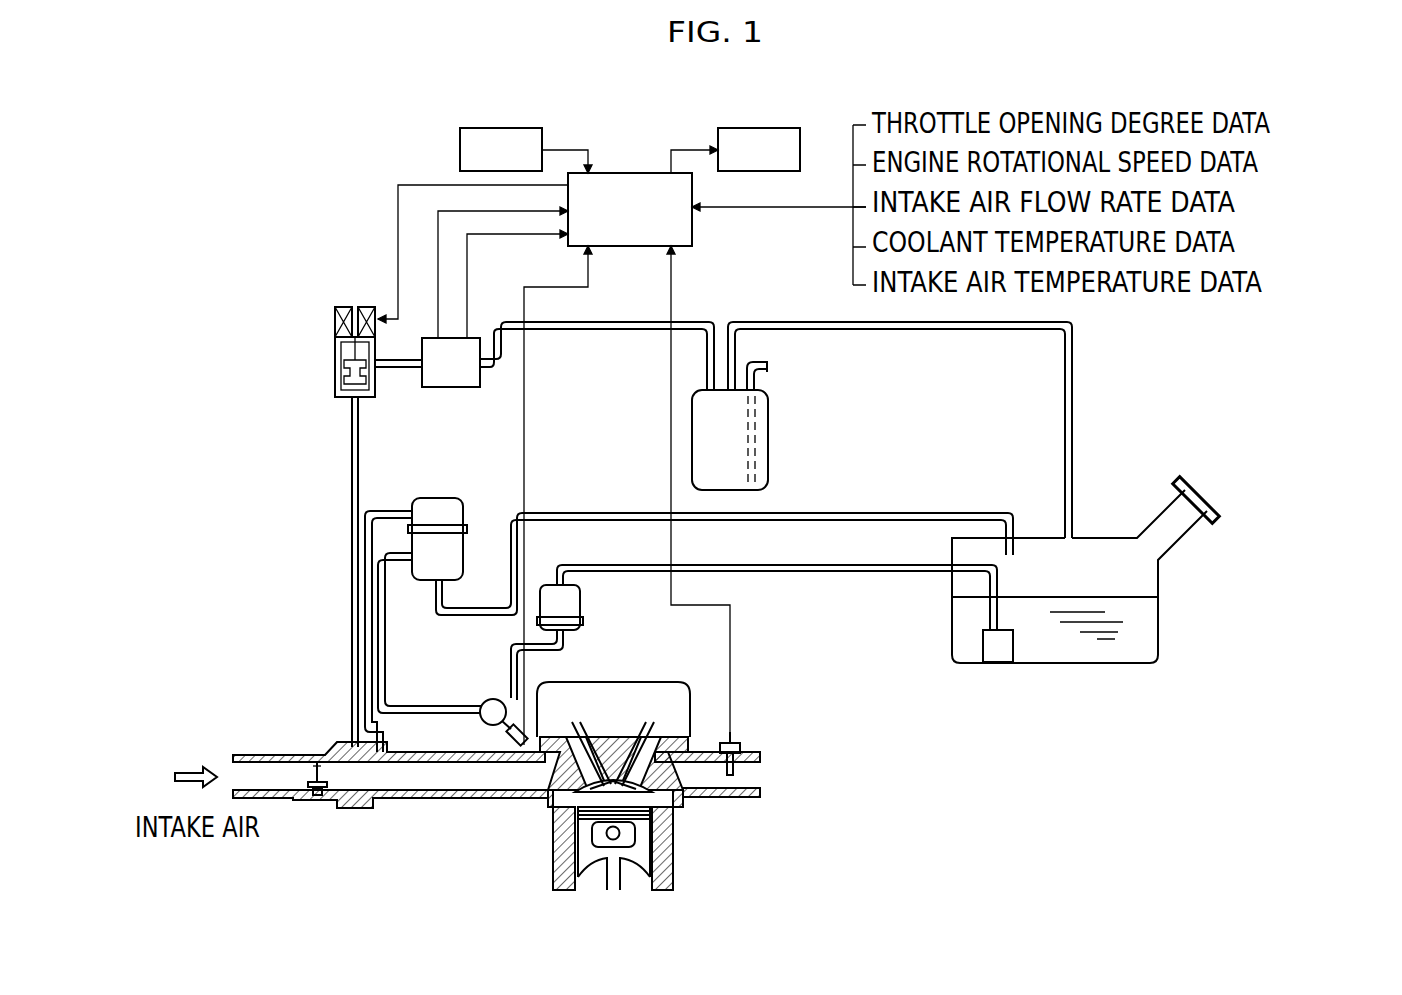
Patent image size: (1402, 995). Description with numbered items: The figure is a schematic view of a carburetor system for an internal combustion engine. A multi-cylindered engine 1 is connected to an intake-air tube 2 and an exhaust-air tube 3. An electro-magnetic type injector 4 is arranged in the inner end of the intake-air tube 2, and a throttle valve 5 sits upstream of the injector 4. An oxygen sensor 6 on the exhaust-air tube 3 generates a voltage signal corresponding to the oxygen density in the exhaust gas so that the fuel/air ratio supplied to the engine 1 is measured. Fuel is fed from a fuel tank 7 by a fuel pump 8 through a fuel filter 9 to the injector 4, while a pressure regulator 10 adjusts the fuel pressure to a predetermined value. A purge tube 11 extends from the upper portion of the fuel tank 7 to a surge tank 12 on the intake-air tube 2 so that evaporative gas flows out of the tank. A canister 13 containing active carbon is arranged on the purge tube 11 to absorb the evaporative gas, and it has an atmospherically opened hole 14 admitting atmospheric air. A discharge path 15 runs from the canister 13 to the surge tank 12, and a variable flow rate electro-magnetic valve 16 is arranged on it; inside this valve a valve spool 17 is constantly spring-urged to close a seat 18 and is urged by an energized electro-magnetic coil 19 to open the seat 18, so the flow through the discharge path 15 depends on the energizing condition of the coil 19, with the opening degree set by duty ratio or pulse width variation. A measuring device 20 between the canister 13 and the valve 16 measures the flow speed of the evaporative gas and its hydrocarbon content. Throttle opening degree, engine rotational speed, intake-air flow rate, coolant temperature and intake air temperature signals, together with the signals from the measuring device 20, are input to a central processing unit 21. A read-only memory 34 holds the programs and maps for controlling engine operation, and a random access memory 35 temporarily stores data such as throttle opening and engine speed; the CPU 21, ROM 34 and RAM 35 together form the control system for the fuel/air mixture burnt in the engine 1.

The multi-cylindered engine 1 is at (675, 853).
The intake-air tube 2 is at (470, 798).
The exhaust-air tube 3 is at (745, 800).
The electro-magnetic type injector 4 is at (505, 741).
The throttle valve 5 is at (316, 762).
The oxygen sensor 6 is at (741, 767).
The fuel tank 7 is at (1100, 663).
The fuel pump 8 is at (1013, 650).
The fuel filter 9 is at (754, 632).
The pressure regulator 10 is at (466, 499).
The purge tube 11 is at (1073, 388).
The surge tank 12 is at (357, 808).
The canister 13 is at (770, 466).
The atmospherically opened hole 14 is at (768, 376).
The discharge path 15 is at (359, 437).
The variable flow rate electro-magnetic valve 16 is at (336, 356).
The valve spool 17 is at (340, 345).
The seat 18 is at (344, 371).
The electro-magnetic coil 19 is at (340, 307).
The measuring device 20 is at (466, 388).
The central processing unit 21 is at (693, 228).
The read-only memory 34 is at (460, 148).
The random access memory 35 is at (745, 128).